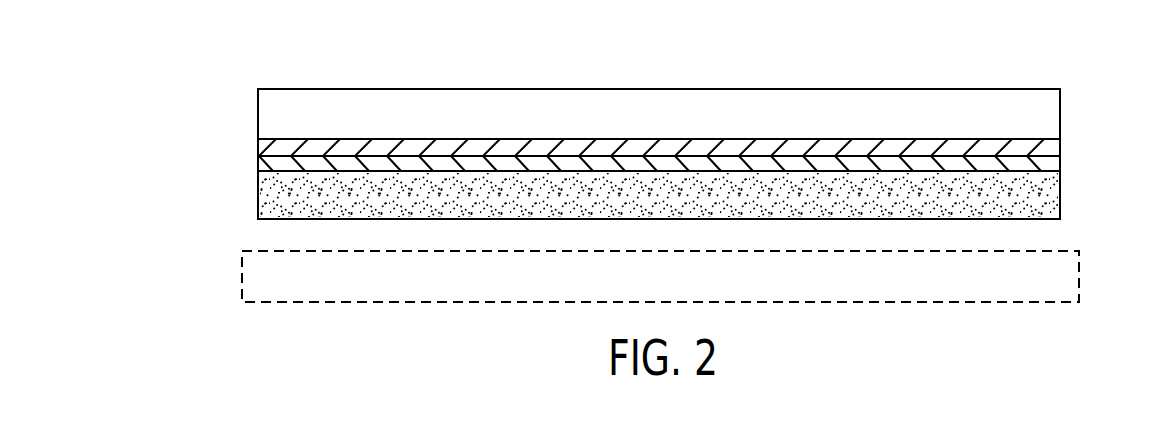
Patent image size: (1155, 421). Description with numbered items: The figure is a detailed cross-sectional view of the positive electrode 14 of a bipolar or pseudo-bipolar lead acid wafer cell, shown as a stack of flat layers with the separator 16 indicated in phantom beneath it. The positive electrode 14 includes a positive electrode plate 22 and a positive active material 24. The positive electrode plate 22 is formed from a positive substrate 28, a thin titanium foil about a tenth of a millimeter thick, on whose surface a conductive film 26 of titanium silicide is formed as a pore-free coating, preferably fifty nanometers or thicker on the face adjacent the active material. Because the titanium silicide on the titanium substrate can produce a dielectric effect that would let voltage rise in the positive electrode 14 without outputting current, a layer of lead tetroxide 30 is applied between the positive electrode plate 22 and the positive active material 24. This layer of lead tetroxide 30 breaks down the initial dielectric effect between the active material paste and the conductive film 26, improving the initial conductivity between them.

The positive electrode 14 is at (721, 54).
The separator 16 is at (1060, 272).
The positive electrode plate 22 is at (243, 88).
The positive active material 24 is at (273, 193).
The conductive film 26 is at (1048, 148).
The positive substrate 28 is at (1009, 107).
The layer of lead tetroxide 30 is at (1048, 164).